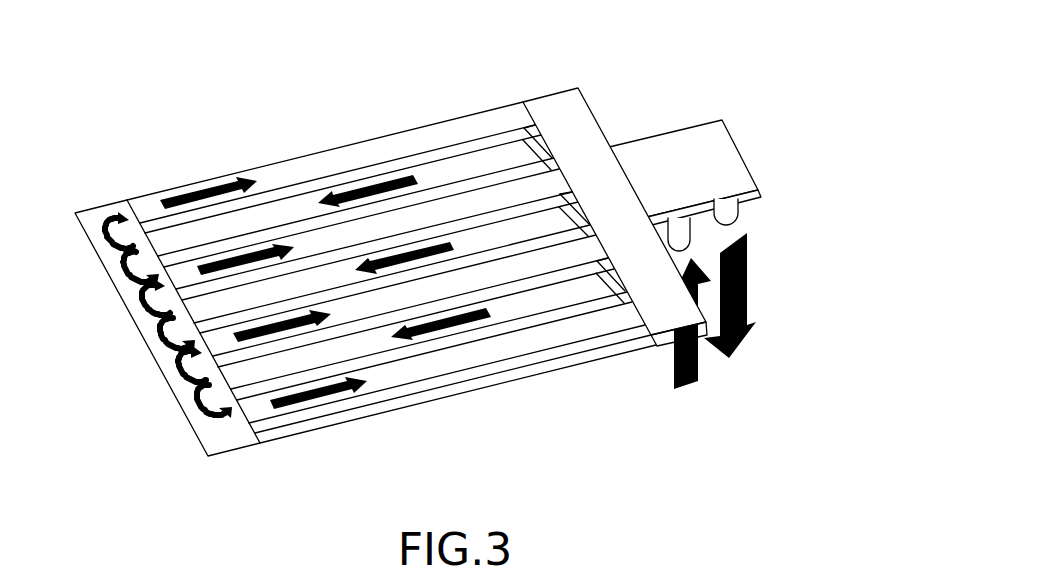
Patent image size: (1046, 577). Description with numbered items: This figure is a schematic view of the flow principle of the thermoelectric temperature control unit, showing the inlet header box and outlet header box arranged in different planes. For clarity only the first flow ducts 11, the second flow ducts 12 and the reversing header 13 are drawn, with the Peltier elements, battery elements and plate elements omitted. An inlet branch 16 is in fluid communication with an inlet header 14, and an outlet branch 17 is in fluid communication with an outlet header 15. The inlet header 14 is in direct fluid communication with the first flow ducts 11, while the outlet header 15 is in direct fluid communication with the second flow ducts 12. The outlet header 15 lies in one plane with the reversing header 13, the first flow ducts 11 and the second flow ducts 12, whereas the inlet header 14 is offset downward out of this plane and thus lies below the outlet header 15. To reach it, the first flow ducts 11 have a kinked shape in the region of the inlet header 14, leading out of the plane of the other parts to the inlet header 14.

The first flow ducts 11 is at (535, 312).
The second flow ducts 12 is at (450, 372).
The reversing header 13 is at (220, 446).
The inlet header 14 is at (652, 347).
The outlet header 15 is at (568, 108).
The inlet branch 16 is at (682, 232).
The outlet branch 17 is at (738, 204).